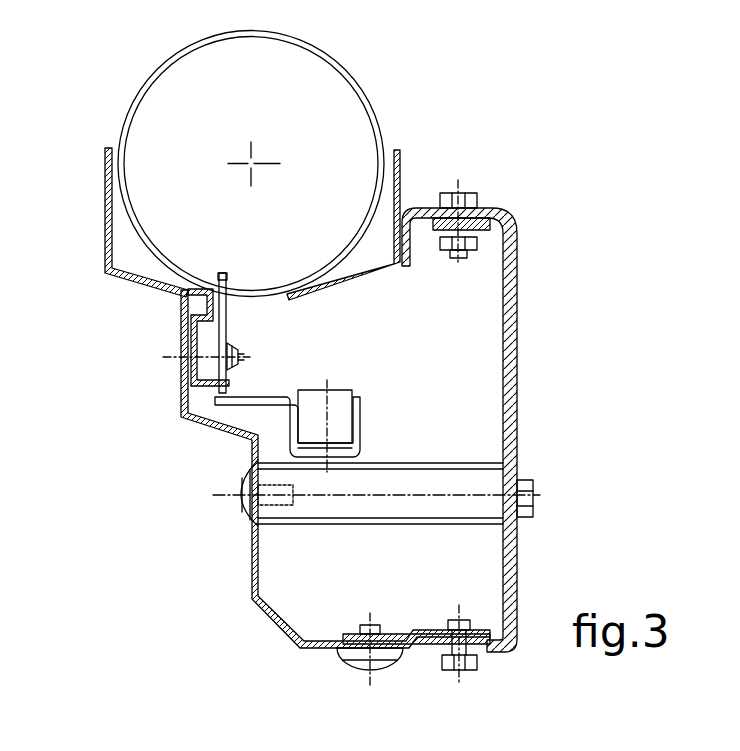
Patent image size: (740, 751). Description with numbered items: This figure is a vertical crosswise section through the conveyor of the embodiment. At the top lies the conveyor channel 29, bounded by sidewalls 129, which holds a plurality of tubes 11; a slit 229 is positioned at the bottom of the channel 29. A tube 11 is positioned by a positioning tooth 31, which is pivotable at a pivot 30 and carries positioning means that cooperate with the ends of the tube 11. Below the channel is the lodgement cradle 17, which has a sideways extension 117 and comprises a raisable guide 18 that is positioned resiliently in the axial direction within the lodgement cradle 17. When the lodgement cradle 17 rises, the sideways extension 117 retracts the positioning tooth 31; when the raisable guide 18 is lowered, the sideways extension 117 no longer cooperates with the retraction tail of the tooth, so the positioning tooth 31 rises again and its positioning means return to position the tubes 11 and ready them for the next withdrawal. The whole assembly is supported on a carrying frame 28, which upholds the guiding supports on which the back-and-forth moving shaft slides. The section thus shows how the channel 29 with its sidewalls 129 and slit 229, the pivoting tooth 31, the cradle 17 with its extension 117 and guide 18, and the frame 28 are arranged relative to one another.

The tube 11 is at (343, 75).
The conveyor channel 29 is at (179, 151).
The sidewall 129 is at (397, 172).
The carrying frame 28 is at (510, 297).
The sideways extension 117 is at (232, 404).
The slit 229 is at (242, 307).
The positioning tooth 31 is at (220, 276).
The pivot 30 is at (230, 356).
The lodgement cradle 17 is at (356, 427).
The raisable guide 18 is at (313, 418).